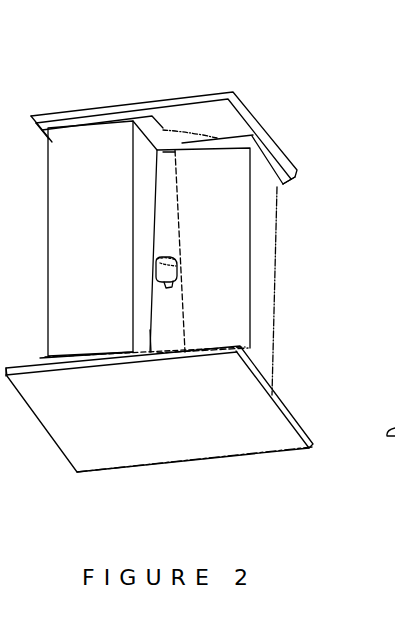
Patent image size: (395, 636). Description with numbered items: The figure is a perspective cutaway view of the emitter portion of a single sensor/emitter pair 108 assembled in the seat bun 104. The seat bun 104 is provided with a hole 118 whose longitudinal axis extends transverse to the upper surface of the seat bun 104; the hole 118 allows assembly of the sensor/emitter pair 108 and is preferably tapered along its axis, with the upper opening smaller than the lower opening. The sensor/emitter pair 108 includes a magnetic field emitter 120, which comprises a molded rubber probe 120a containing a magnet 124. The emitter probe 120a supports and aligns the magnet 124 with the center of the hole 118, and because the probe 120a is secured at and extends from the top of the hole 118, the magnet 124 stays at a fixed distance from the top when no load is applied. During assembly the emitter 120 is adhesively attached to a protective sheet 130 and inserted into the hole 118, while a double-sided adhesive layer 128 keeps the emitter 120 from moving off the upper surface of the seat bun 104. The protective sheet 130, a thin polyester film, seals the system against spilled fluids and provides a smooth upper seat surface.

The seat bun 104 is at (260, 336).
The sensor/emitter pair 108 is at (180, 249).
The hole 118 is at (163, 315).
The magnetic field emitter 120 is at (163, 224).
The molded rubber probe 120a is at (168, 286).
The magnet 124 is at (172, 268).
The double-sided adhesive layer 128 is at (183, 144).
The protective sheet 130 is at (208, 117).